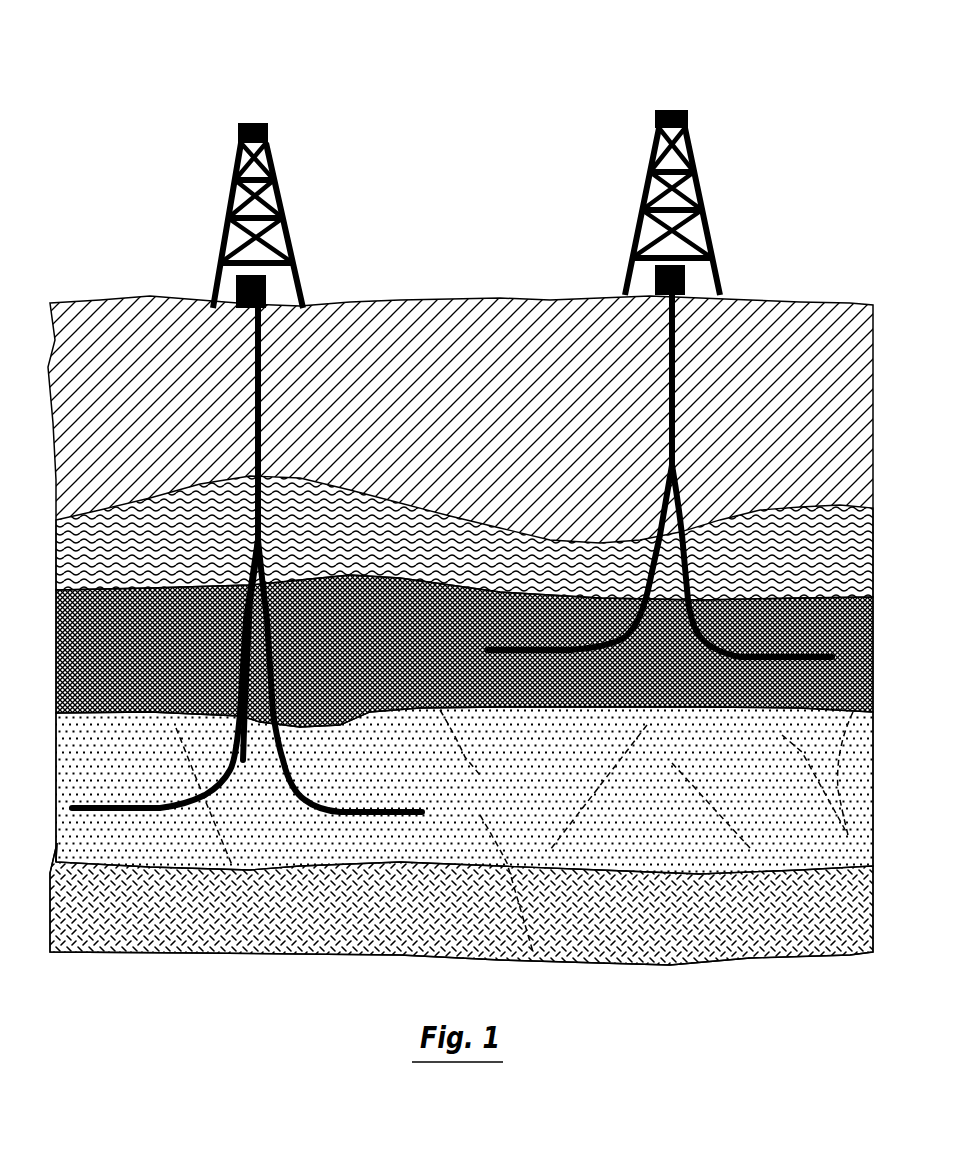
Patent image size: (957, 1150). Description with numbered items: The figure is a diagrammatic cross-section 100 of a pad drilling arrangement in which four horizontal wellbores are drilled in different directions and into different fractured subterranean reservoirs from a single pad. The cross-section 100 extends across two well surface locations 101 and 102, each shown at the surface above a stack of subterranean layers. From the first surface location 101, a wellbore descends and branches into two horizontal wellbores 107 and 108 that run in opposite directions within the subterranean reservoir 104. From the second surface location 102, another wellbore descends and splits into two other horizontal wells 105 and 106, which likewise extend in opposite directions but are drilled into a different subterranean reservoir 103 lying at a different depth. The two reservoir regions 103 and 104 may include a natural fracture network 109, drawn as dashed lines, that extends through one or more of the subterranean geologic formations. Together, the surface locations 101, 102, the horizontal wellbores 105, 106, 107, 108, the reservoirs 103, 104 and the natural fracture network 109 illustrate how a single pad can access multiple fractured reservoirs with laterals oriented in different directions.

The cross-section 100 is at (487, 226).
The well surface location 101 is at (282, 195).
The well surface location 102 is at (695, 176).
The subterranean reservoir 103 is at (464, 651).
The subterranean reservoir 104 is at (762, 780).
The horizontal well 105 is at (579, 557).
The horizontal well 106 is at (752, 561).
The horizontal wellbore 107 is at (165, 674).
The horizontal wellbore 108 is at (340, 676).
The natural fracture network 109 is at (411, 831).